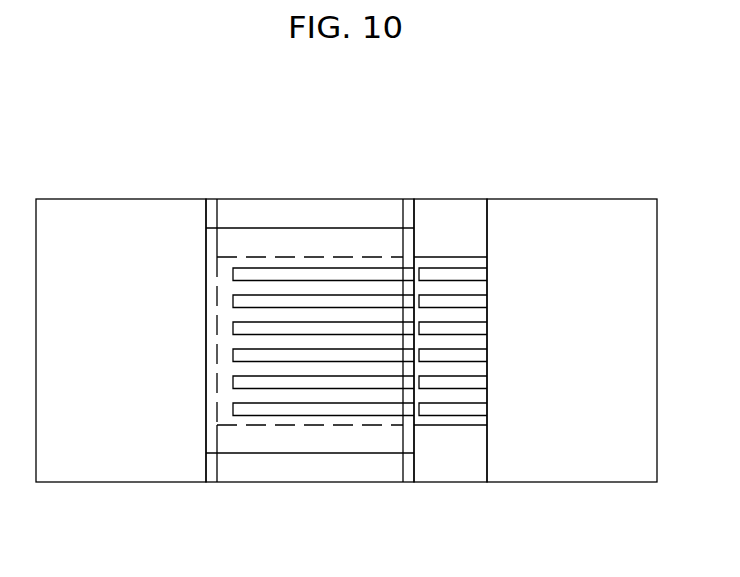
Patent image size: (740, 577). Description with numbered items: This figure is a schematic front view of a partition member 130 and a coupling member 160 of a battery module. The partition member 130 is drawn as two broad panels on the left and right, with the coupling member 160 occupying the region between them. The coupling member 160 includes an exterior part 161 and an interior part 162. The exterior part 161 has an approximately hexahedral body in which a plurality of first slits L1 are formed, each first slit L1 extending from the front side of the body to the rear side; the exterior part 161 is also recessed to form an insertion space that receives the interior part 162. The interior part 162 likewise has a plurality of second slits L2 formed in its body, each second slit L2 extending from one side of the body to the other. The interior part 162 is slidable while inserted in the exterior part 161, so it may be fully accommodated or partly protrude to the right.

The partition member 130 is at (120, 218).
The coupling member 160 is at (470, 138).
The exterior part 161 is at (307, 198).
The interior part 162 is at (448, 198).
The first slits L1 is at (323, 408).
The second slits L2 is at (448, 408).